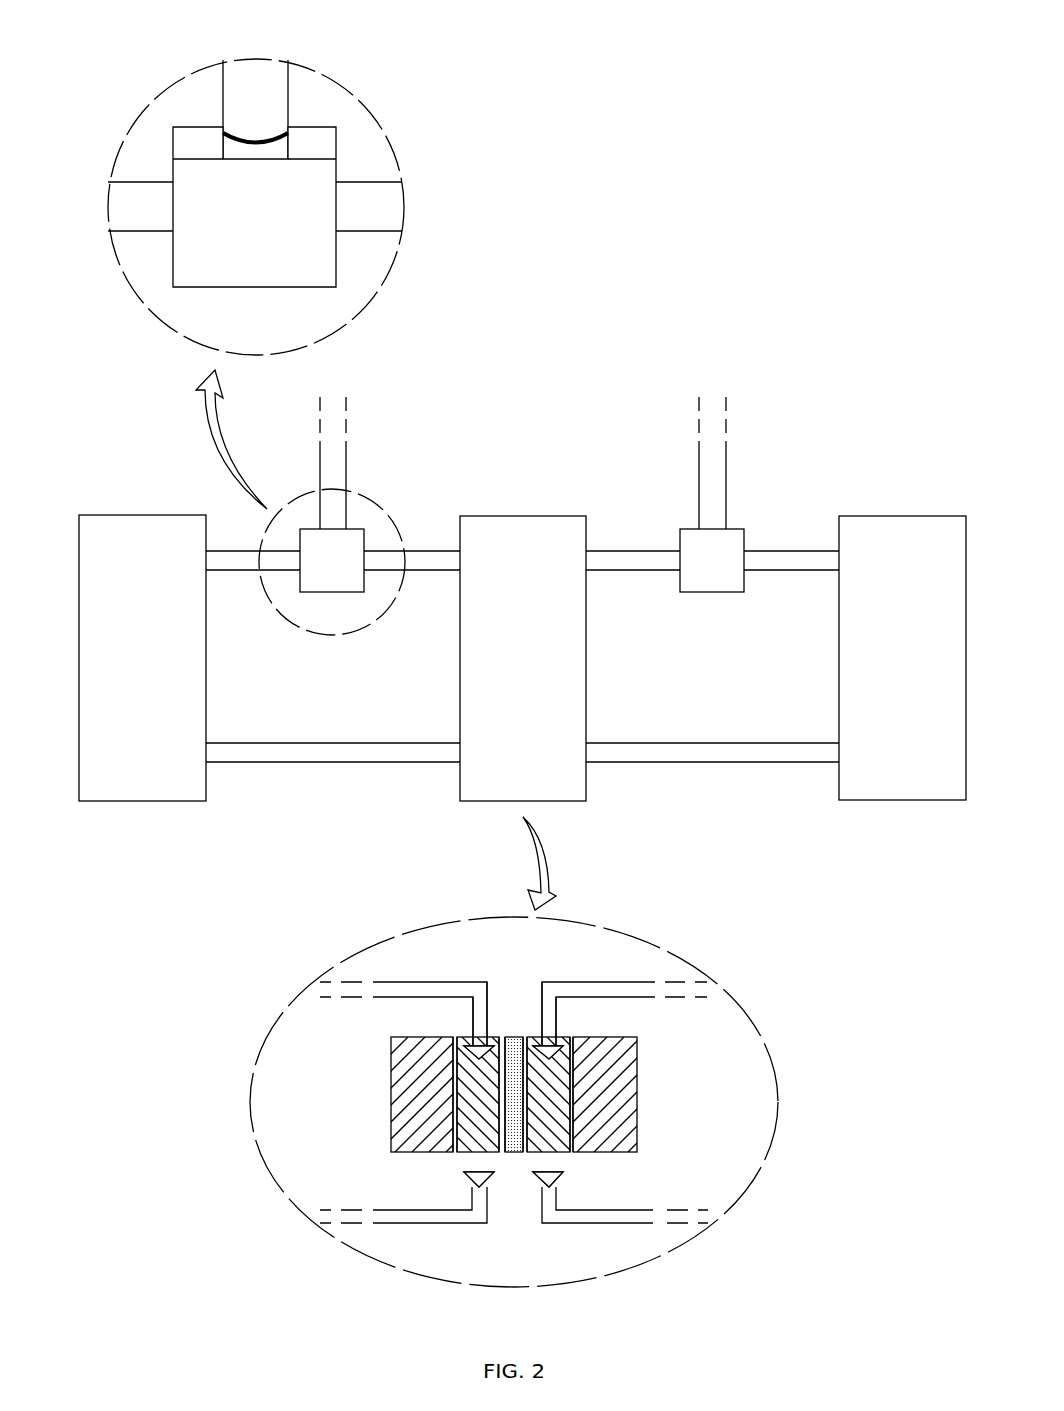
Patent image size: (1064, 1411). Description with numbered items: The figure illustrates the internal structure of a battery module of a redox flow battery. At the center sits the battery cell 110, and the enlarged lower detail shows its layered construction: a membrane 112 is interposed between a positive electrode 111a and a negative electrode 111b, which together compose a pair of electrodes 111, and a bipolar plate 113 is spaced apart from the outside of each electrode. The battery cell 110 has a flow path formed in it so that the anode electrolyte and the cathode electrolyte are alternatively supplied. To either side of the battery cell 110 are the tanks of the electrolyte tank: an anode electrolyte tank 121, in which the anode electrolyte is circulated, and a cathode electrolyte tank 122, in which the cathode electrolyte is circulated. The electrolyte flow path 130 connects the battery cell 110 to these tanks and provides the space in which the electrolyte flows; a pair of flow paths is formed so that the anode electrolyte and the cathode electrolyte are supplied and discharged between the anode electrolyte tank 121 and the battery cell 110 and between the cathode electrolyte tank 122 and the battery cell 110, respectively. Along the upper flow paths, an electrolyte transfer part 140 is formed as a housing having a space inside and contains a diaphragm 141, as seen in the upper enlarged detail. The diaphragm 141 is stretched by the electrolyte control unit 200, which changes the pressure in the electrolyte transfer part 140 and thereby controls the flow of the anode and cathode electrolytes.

The battery cell 110 is at (541, 515).
The pair of electrodes 111 is at (897, 1048).
The positive electrode 111a is at (477, 1087).
The negative electrode 111b is at (553, 1087).
The membrane 112 is at (513, 1047).
The bipolar plate 113 is at (402, 1128).
The anode electrolyte tank 121 is at (139, 788).
The cathode electrolyte tank 122 is at (907, 788).
The electrolyte flow path 130 is at (143, 197).
The electrolyte transfer part 140 is at (315, 265).
The diaphragm 141 is at (262, 137).
The electrolyte control unit 200 is at (235, 97).